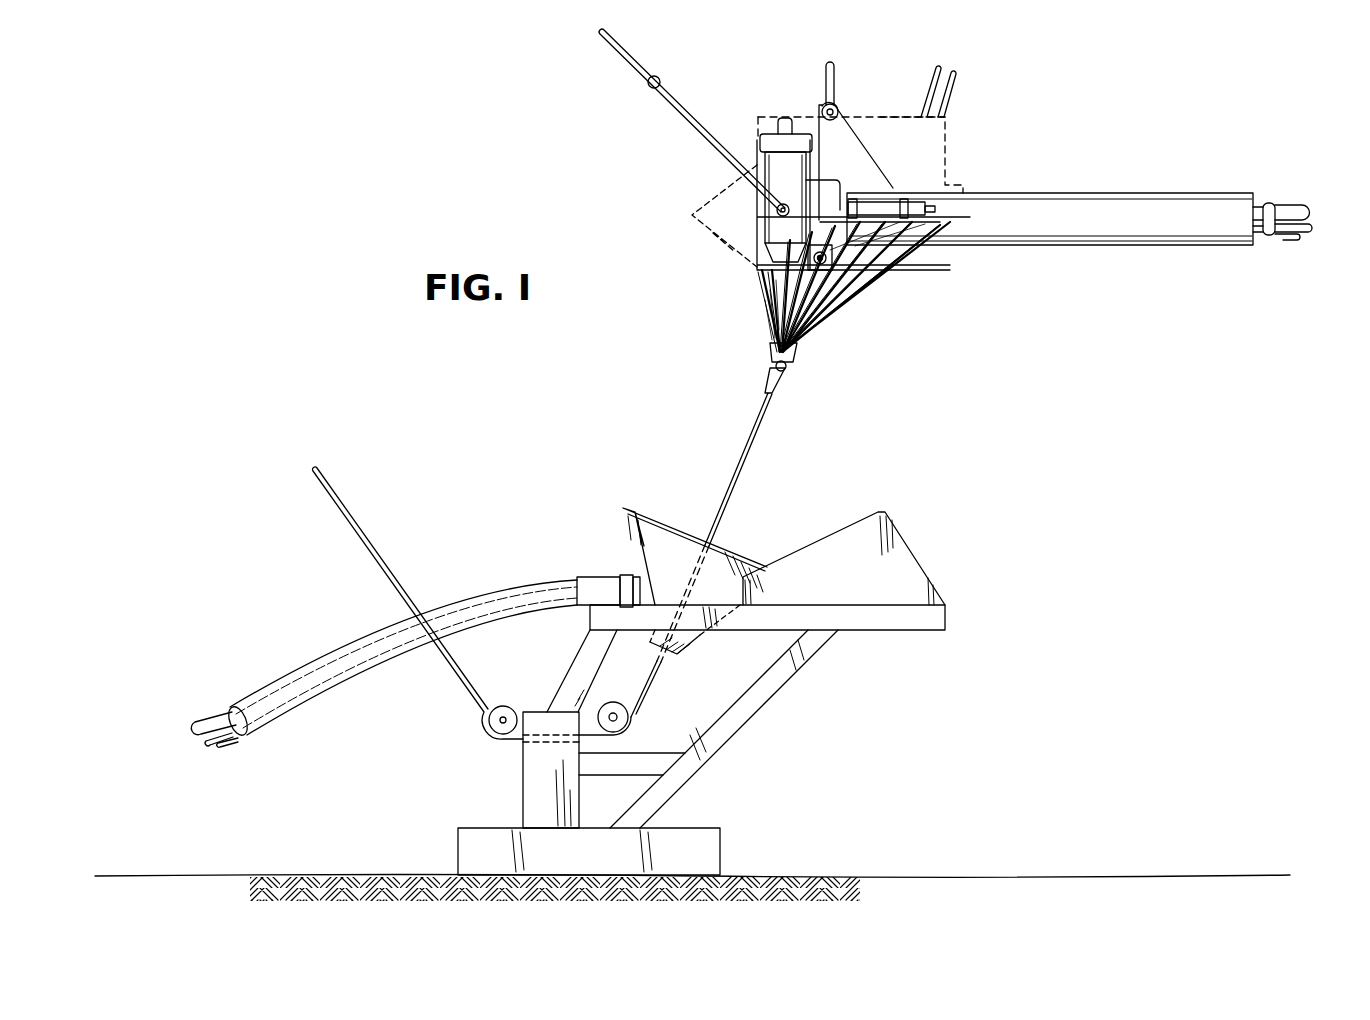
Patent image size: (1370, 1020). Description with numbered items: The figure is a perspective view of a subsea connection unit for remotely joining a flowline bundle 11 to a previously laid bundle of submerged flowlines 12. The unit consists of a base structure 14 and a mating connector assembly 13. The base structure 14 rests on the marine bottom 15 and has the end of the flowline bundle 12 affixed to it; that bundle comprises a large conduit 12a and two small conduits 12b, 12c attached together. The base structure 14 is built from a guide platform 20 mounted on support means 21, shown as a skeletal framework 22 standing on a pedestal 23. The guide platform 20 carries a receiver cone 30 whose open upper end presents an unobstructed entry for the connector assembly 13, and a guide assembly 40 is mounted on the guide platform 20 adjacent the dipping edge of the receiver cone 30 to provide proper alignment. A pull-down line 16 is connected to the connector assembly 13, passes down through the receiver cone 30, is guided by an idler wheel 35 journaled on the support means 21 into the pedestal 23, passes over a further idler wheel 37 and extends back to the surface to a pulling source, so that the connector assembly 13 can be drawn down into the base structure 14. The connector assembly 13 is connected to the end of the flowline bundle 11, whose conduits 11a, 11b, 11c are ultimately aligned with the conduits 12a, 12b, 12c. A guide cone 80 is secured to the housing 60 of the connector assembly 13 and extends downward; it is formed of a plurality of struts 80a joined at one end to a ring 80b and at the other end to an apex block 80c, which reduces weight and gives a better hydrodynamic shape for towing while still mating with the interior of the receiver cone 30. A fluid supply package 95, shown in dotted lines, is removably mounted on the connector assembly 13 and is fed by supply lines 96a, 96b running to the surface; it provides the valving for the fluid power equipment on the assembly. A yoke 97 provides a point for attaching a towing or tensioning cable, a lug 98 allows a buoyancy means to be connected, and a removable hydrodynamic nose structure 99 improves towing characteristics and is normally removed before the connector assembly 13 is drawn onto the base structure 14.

The flowline bundle 11 is at (1272, 200).
The conduit 11a is at (1300, 205).
The conduit 11b is at (1312, 229).
The conduit 11c is at (1294, 242).
The bundle of submerged flowlines 12 is at (355, 642).
The large conduit 12a is at (210, 716).
The small conduit 12b is at (206, 741).
The small conduit 12c is at (225, 742).
The connector assembly 13 is at (975, 176).
The base structure 14 is at (655, 505).
The marine bottom 15 is at (890, 872).
The pull-down line 16 is at (766, 440).
The guide platform 20 is at (965, 613).
The support means 21 is at (737, 764).
The skeletal framework 22 is at (760, 716).
The pedestal 23 is at (506, 826).
The receiver cone 30 is at (690, 641).
The idler wheel 35 is at (614, 701).
The idler wheel 37 is at (503, 705).
The guide assembly 40 is at (922, 531).
The housing 60 is at (1128, 190).
The guide cone 80 is at (905, 282).
The struts 80a is at (889, 295).
The ring 80b is at (965, 218).
The apex block 80c is at (794, 362).
The fluid supply package 95 is at (903, 116).
The supply line 96a is at (942, 68).
The supply line 96b is at (958, 84).
The yoke 97 is at (688, 121).
The lug 98 is at (825, 73).
The hydrodynamic nose structure 99 is at (713, 233).